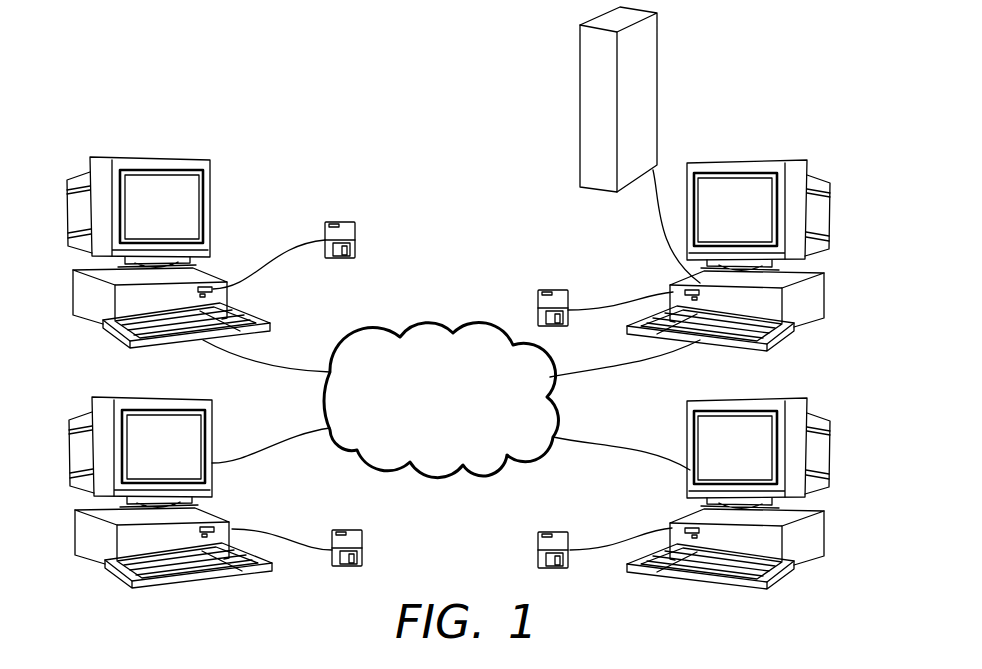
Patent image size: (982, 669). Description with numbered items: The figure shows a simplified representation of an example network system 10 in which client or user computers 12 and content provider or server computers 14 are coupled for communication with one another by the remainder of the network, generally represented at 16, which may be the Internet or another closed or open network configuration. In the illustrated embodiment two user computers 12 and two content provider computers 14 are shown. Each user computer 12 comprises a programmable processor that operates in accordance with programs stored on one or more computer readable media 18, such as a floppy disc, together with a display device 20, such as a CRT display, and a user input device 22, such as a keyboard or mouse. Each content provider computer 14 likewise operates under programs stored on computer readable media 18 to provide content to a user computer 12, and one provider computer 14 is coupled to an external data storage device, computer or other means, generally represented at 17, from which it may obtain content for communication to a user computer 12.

The network system 10 is at (367, 100).
The user computer 12 is at (82, 115).
The content provider computer 14 is at (807, 118).
The network 16 is at (453, 330).
The external device 17 is at (580, 57).
The computer readable media 18 is at (340, 222).
The display device 20 is at (157, 157).
The user input device 22 is at (253, 313).